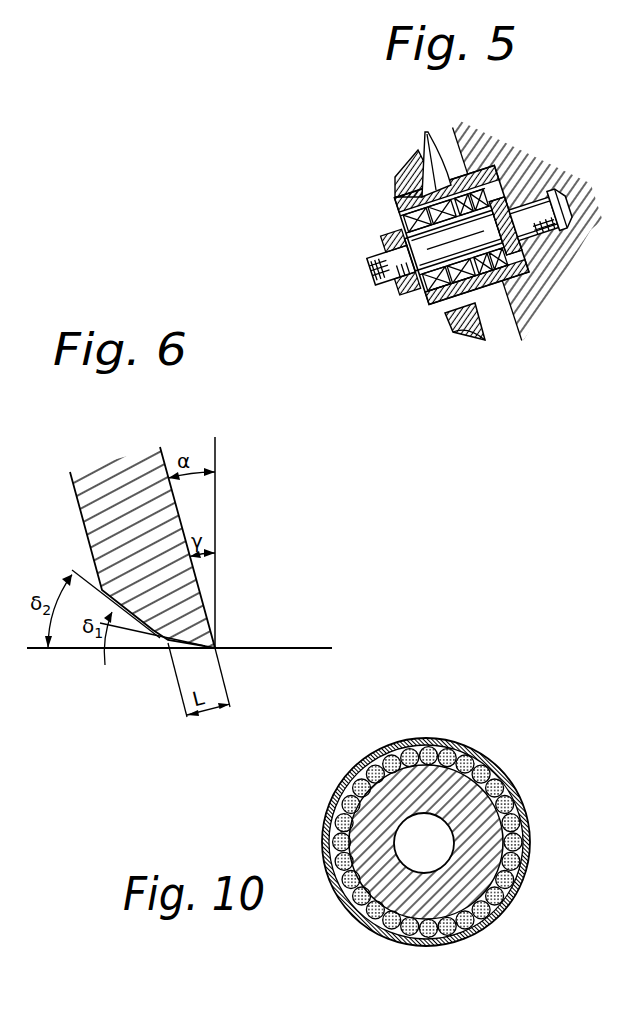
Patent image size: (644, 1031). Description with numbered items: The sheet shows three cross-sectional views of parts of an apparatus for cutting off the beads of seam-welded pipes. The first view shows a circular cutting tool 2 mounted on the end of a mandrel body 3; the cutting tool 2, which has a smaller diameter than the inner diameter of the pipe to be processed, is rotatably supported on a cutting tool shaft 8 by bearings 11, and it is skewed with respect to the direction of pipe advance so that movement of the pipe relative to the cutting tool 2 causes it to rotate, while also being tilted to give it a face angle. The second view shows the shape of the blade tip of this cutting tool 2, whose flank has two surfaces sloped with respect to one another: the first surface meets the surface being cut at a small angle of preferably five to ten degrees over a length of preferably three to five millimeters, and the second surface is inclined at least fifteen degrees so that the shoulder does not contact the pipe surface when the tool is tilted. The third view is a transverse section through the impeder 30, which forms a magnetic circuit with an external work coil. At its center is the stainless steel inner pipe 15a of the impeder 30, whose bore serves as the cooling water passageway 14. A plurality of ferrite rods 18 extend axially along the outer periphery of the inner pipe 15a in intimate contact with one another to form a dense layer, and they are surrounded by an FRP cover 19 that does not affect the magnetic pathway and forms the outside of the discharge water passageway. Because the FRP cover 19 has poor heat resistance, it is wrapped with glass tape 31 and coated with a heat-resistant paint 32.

In FIG. 5, the mandrel body 3 is at (541, 166).
In FIG. 5, the bearings 11 is at (423, 153).
In FIG. 5, the cutting tool shaft 8 is at (390, 290).
In FIG. 5, the circular cutting tool 2 is at (462, 338).
In FIG. 10, the impeder 30 is at (448, 828).
In FIG. 10, the FRP cover 19 is at (459, 818).
In FIG. 10, the glass tape 31 is at (459, 840).
In FIG. 10, the heat-resistant paint 32 is at (502, 766).
In FIG. 10, the cooling water passageway 14 is at (442, 845).
In FIG. 10, the ferrite rods 18 is at (355, 787).
In FIG. 10, the inner pipe of the impeder 15a is at (350, 915).